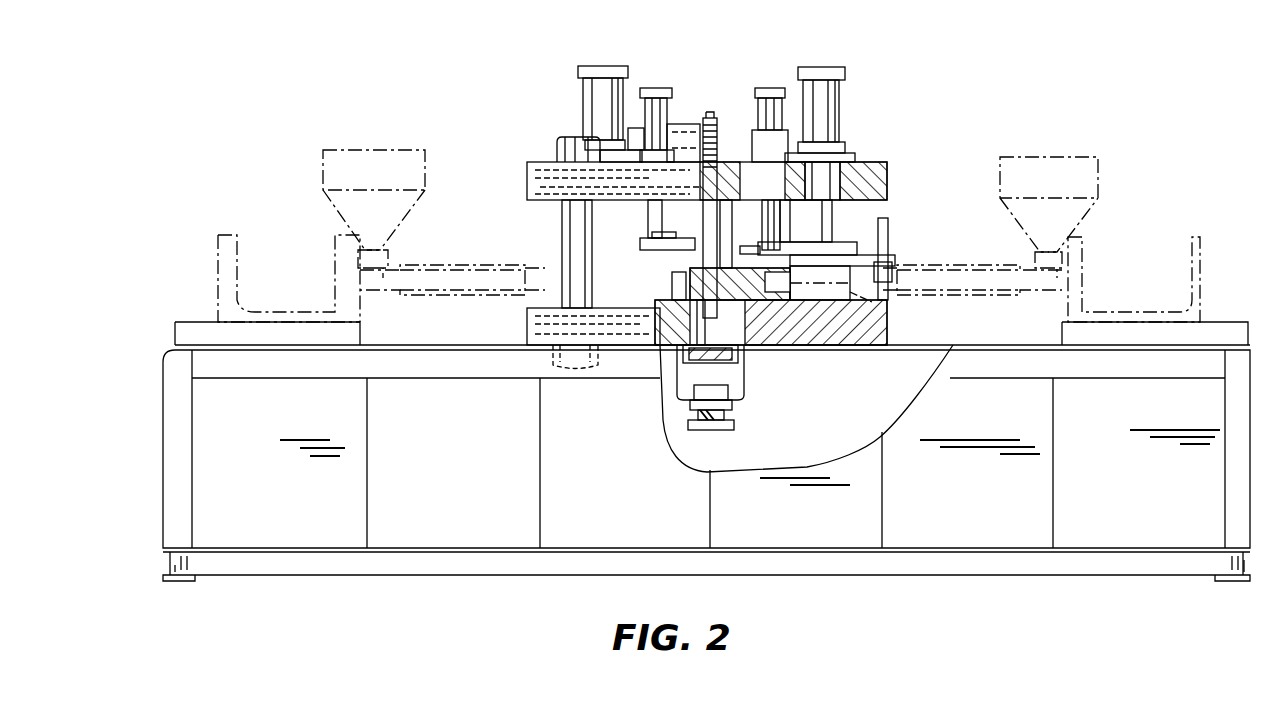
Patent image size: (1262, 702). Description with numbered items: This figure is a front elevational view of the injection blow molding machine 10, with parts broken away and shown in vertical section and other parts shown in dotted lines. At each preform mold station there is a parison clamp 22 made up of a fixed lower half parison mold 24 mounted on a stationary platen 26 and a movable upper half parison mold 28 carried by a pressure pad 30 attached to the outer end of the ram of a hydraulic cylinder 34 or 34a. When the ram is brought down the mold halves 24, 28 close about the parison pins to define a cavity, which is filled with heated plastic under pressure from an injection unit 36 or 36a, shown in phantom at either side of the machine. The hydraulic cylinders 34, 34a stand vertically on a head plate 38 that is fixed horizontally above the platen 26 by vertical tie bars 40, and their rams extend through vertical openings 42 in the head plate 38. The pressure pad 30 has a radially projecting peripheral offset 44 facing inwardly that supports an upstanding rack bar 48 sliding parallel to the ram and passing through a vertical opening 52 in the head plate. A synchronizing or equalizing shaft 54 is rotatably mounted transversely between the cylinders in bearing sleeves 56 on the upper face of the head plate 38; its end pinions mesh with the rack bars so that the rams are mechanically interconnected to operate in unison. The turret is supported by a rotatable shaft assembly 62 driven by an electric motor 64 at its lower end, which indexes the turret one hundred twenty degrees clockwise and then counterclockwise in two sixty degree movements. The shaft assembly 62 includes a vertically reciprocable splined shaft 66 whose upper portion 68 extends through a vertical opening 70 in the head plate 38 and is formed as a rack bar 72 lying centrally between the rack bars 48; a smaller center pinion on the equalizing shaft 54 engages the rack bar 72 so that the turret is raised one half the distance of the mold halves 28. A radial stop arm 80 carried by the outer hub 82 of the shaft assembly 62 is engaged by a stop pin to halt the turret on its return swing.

The injection blow molding machine 10 is at (1212, 335).
The parison clamp 22 is at (807, 342).
The lower half parison mold 24 is at (880, 308).
The stationary platen 26 is at (888, 342).
The upper half parison mold 28 is at (850, 268).
The pressure pad 30 is at (835, 255).
The hydraulic cylinder 34 is at (825, 108).
The hydraulic cylinder 34a is at (600, 66).
The injection unit 36 is at (1022, 150).
The injection unit 36a is at (385, 145).
The head plate 38 is at (888, 182).
The tie bar 40 is at (563, 222).
The vertical opening 42 is at (835, 175).
The peripheral offset 44 is at (760, 250).
The rack bar 48 is at (798, 240).
The vertical opening 52 is at (739, 234).
The synchronizing or equalizing shaft 54 is at (795, 130).
The bearing sleeve 56 is at (680, 136).
The rotatable shaft assembly 62 is at (680, 350).
The electric motor 64 is at (690, 426).
The splined shaft 66 is at (662, 322).
The upper portion 68 is at (660, 208).
The vertical opening 70 is at (762, 215).
The rack bar 72 is at (716, 128).
The radial stop arm 80 is at (652, 232).
The outer hub 82 is at (722, 262).